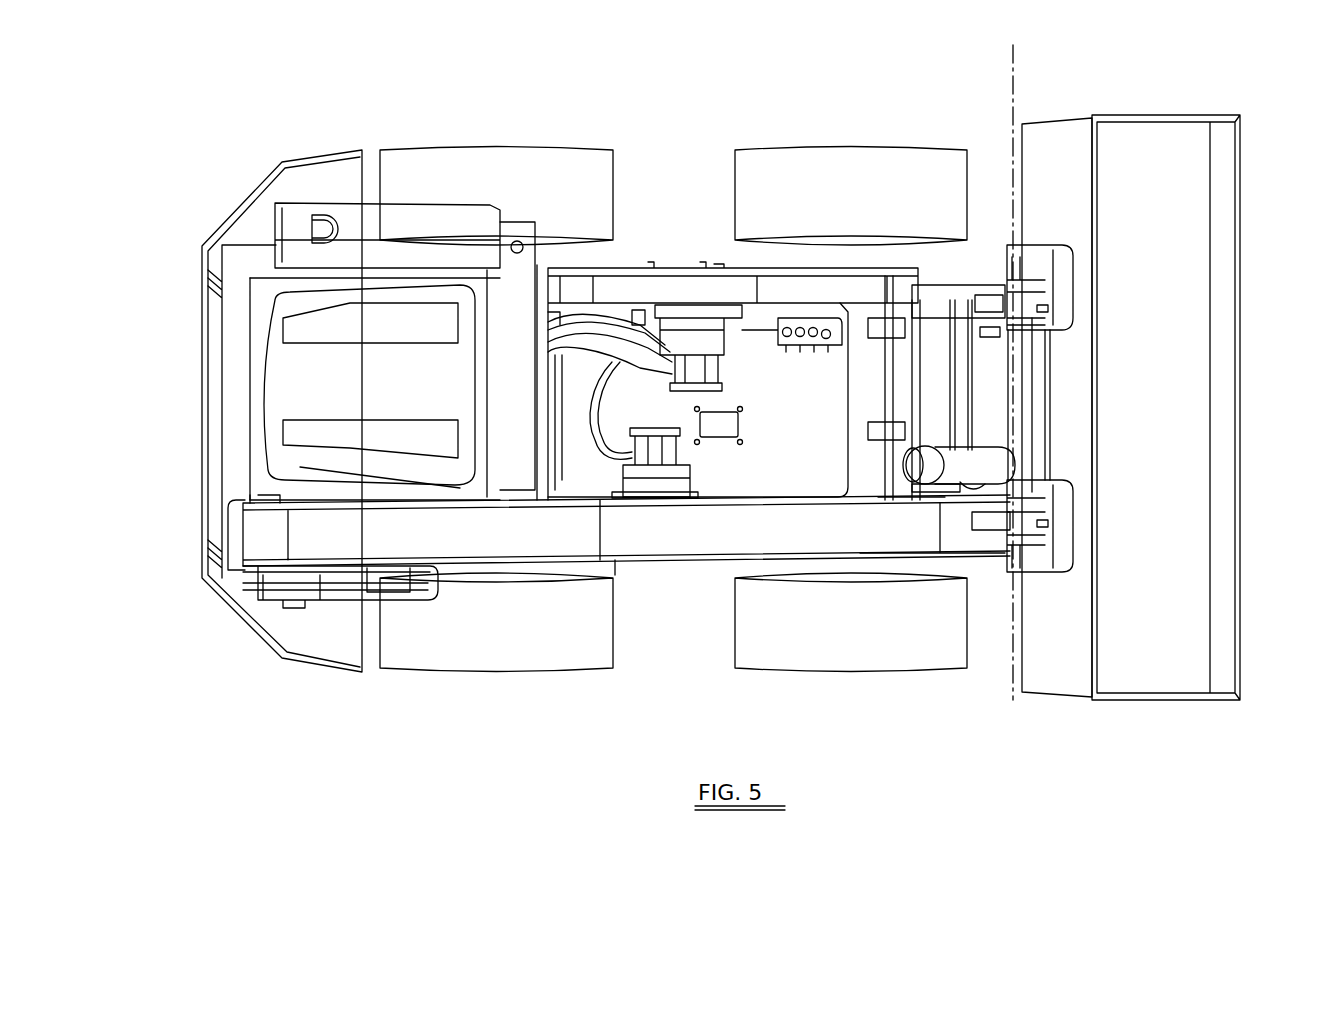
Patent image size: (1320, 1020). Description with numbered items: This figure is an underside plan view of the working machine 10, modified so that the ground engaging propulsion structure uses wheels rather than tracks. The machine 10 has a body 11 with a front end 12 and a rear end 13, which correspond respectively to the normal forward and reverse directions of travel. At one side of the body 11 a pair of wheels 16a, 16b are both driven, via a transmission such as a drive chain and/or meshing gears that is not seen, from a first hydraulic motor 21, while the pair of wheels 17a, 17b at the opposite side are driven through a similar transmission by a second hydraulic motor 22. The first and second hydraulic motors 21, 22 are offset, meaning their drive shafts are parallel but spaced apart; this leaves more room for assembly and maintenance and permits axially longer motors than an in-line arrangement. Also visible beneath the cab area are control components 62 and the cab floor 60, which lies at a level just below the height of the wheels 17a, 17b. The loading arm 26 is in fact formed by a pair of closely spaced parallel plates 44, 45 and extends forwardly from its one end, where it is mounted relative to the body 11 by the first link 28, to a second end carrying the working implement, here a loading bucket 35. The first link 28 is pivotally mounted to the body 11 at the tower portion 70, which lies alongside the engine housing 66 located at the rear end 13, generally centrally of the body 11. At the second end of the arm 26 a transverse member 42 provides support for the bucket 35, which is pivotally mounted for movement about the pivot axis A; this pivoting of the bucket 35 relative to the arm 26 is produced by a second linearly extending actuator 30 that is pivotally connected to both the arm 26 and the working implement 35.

The working machine 10 is at (783, 125).
The pivot axis A is at (1014, 90).
The body 11 is at (628, 283).
The front end 12 is at (1165, 407).
The rear end 13 is at (324, 411).
The wheel 16a is at (906, 672).
The wheel 16b is at (533, 672).
The wheel 17a is at (905, 148).
The wheel 17b is at (532, 146).
The first hydraulic motor 21 is at (688, 478).
The second hydraulic motor 22 is at (695, 330).
The loading arm 26 is at (645, 560).
The first link 28 is at (321, 620).
The second linearly extending actuator 30 is at (1016, 466).
The loading bucket 35 is at (1210, 388).
The transverse member 42 is at (1038, 388).
The plate 44 is at (778, 548).
The plate 45 is at (873, 503).
The cab floor 60 is at (698, 400).
The control components 62 is at (810, 332).
The engine housing 66 is at (278, 368).
The tower portion 70 is at (237, 541).